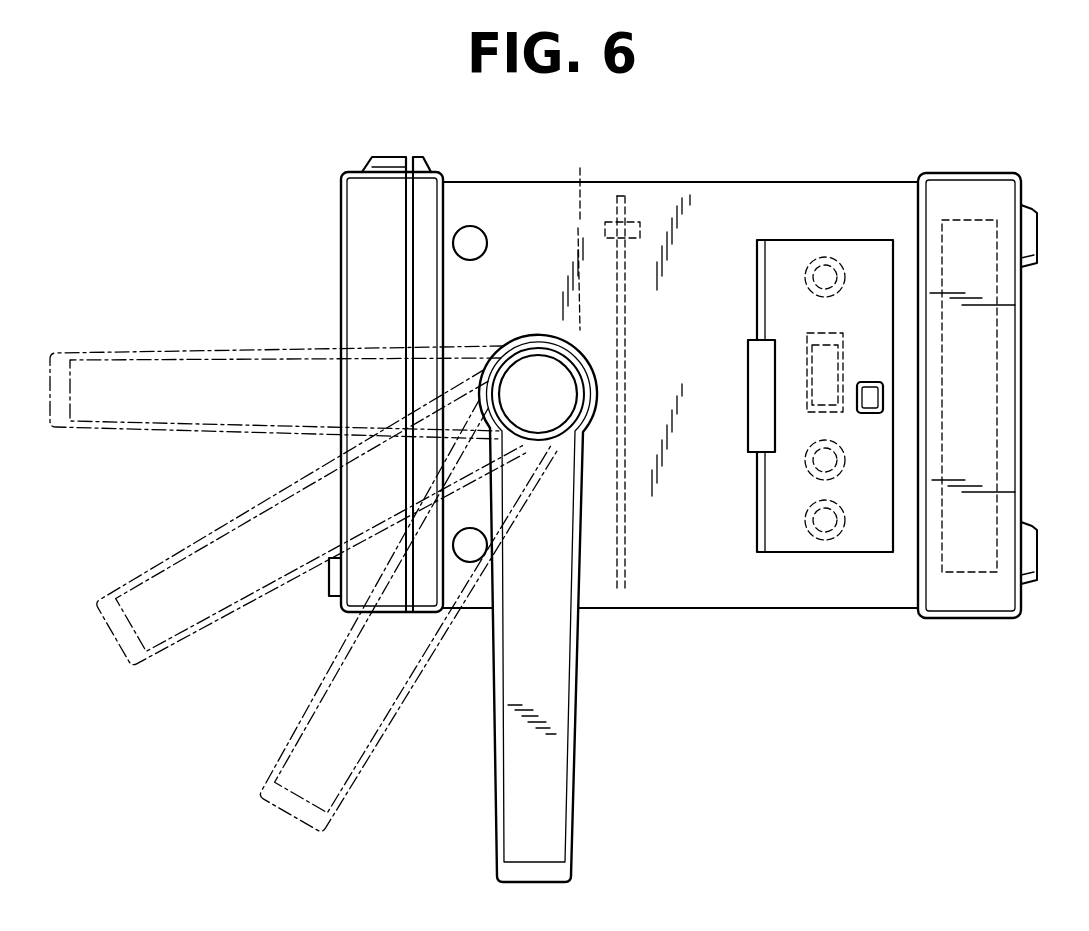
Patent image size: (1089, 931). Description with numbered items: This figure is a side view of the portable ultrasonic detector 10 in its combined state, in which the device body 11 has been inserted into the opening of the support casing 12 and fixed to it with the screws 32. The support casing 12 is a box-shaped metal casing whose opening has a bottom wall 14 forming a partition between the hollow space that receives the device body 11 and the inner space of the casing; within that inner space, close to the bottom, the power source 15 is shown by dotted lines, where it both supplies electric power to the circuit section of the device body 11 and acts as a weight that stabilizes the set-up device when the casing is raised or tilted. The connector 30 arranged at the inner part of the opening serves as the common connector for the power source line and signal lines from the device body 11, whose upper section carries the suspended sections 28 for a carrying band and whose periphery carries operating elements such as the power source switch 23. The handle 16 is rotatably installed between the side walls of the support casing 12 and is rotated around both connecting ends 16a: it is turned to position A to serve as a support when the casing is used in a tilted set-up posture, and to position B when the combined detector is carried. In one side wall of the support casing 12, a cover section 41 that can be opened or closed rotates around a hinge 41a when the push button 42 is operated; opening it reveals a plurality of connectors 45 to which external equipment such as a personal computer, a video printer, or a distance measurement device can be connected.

The portable ultrasonic detector 10 is at (480, 170).
The device body 11 is at (370, 232).
The support casing 12 is at (750, 208).
The bottom wall 14 is at (626, 200).
The power source 15 is at (1016, 345).
The handle 16 is at (547, 581).
The connecting ends 16a is at (538, 366).
The power source switch 23 is at (327, 584).
The suspended section 28 is at (388, 160).
The connector 30 is at (585, 228).
The screws 32 is at (488, 239).
The cover section 41 is at (787, 398).
The hinge 41a is at (748, 380).
The push button 42 is at (868, 402).
The connectors 45 is at (806, 343).
The position A is at (298, 758).
The position B is at (118, 375).